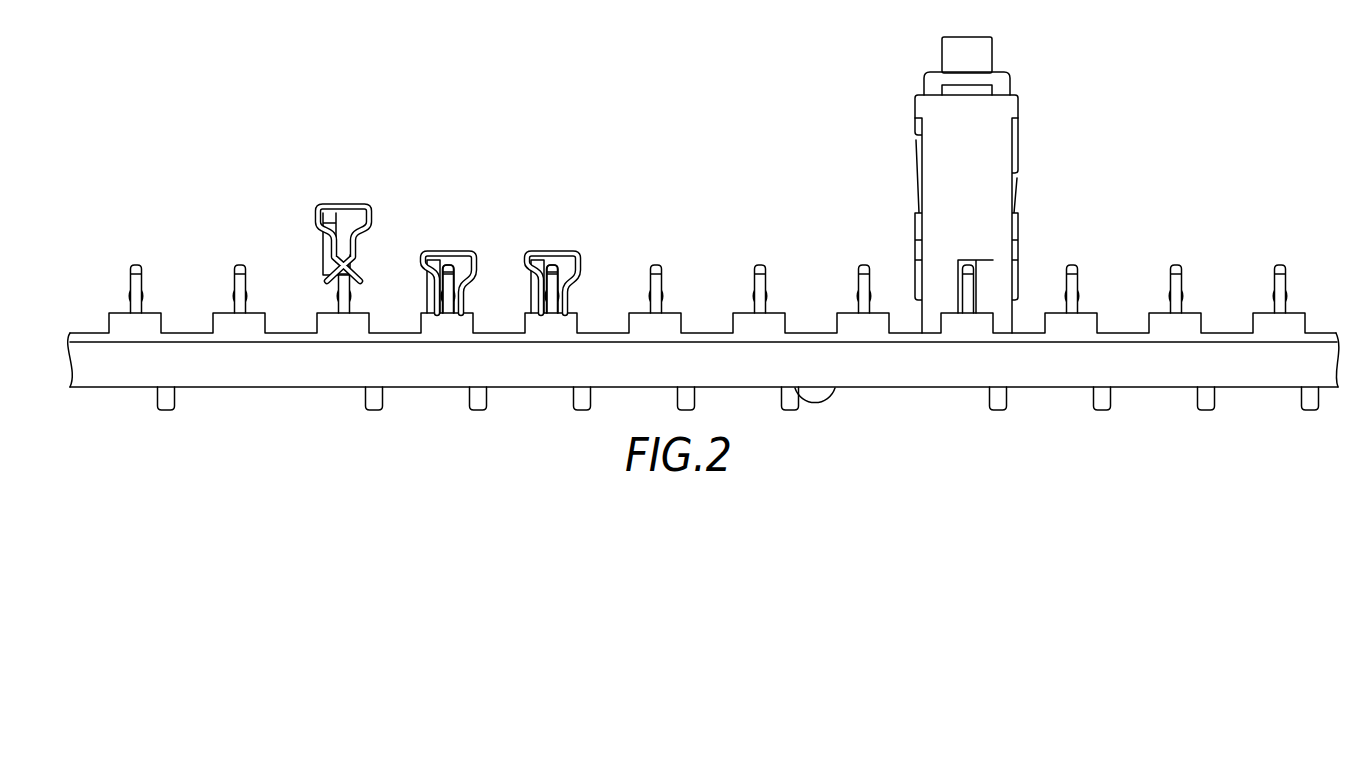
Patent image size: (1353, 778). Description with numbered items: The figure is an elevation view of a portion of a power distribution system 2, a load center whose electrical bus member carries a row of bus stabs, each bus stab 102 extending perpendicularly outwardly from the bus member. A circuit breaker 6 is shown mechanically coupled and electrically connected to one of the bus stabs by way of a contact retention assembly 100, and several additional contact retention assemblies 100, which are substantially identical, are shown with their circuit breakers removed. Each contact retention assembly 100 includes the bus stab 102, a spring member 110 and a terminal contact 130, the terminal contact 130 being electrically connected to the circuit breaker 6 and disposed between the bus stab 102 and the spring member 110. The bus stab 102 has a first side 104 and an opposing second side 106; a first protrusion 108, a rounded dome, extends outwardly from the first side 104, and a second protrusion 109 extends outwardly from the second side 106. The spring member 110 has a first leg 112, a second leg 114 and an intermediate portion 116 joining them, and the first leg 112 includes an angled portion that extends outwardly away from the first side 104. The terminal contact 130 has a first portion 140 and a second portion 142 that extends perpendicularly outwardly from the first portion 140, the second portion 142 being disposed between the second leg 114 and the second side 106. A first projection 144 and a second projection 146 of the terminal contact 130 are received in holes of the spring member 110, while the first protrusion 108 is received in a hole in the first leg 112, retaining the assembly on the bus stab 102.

The power distribution system 2 is at (1097, 471).
The circuit breaker 6 is at (1028, 115).
The contact retention assembly 100 is at (218, 137).
The bus stab 102 is at (338, 303).
The first side 104 is at (351, 280).
The second side 106 is at (352, 300).
The first protrusion 108 is at (327, 295).
The second protrusion 109 is at (354, 293).
The spring member 110 is at (340, 187).
The first leg 112 is at (318, 240).
The second leg 114 is at (373, 215).
The intermediate portion 116 is at (333, 203).
The terminal contact 130 is at (324, 248).
The first portion 140 is at (326, 205).
The second portion 142 is at (373, 203).
The first projection 144 is at (350, 203).
The second projection 146 is at (357, 252).